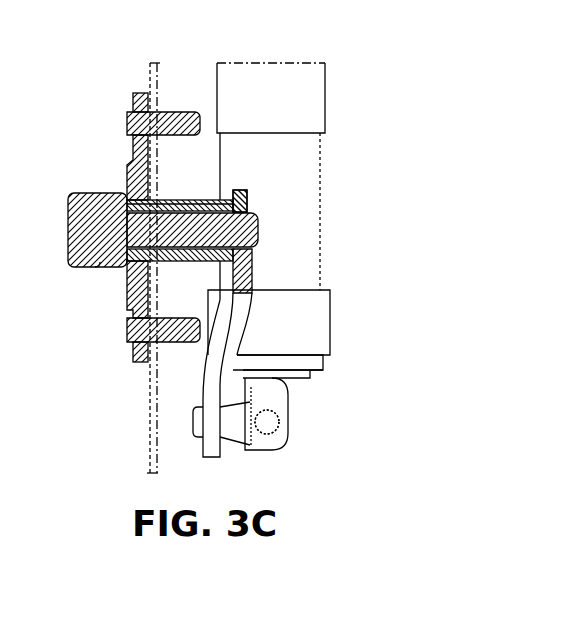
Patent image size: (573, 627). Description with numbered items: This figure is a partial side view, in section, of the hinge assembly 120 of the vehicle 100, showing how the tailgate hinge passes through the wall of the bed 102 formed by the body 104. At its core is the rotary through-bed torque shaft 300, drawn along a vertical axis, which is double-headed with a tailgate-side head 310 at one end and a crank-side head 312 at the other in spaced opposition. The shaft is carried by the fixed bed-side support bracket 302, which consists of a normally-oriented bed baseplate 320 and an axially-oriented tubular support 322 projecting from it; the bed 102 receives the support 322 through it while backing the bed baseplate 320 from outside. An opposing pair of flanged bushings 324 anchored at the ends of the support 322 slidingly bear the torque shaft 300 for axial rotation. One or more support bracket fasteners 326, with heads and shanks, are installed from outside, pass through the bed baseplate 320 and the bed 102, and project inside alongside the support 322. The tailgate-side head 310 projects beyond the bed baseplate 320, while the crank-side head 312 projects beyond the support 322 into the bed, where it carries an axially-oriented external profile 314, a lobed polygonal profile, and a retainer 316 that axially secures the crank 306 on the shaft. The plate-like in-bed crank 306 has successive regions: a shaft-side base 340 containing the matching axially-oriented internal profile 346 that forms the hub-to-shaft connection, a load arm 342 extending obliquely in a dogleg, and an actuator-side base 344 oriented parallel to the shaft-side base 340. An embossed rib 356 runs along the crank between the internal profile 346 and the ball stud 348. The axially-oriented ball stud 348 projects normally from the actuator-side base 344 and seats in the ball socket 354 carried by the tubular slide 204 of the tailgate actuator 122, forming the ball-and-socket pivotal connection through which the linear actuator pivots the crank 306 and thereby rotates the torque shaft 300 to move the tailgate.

The vehicle 100 is at (149, 47).
The bed 102 is at (150, 80).
The body 104 is at (148, 66).
The hinge assembly 120 is at (195, 198).
The tailgate actuator 122 is at (325, 90).
The tubular slide 204 is at (320, 278).
The torque shaft 300 is at (68, 222).
The support bracket 302 is at (128, 172).
The crank 306 is at (256, 272).
The tailgate-side head 310 is at (100, 268).
The crank-side head 312 is at (225, 262).
The external profile 314 is at (247, 193).
The retainer 316 is at (260, 225).
The bed baseplate 320 is at (128, 150).
The tubular support 322 is at (135, 186).
The flanged bushings 324 is at (140, 198).
The support bracket fasteners 326 is at (128, 112).
The shaft-side base 340 is at (247, 204).
The load arm 342 is at (253, 300).
The actuator-side base 344 is at (220, 398).
The internal profile 346 is at (240, 201).
The ball stud 348 is at (267, 422).
The ball socket 354 is at (288, 423).
The embossed rib 356 is at (253, 308).